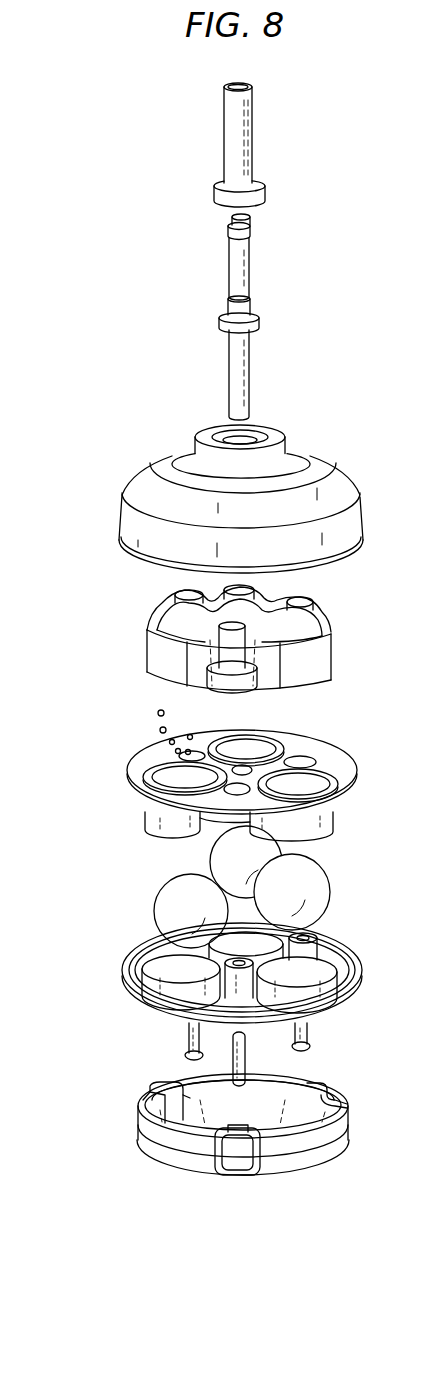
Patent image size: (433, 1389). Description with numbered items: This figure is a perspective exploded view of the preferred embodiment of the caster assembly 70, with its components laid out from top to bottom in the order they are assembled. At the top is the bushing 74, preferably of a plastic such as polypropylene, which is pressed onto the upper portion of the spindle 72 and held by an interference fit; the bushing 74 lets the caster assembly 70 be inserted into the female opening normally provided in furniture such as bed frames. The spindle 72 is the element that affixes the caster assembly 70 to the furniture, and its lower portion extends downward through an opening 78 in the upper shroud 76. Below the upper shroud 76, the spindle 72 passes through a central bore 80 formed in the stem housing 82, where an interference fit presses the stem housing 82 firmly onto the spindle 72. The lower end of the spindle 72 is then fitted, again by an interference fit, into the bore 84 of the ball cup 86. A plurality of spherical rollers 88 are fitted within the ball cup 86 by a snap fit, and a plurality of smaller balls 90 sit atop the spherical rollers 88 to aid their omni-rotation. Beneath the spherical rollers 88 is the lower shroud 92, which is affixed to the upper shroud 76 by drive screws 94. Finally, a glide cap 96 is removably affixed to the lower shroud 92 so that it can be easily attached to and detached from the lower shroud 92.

The caster assembly 70 is at (88, 606).
The spindle 72 is at (250, 263).
The bushing 74 is at (255, 128).
The upper shroud 76 is at (356, 517).
The opening 78 is at (263, 432).
The central bore 80 is at (273, 590).
The stem housing 82 is at (331, 653).
The bore 84 is at (280, 752).
The ball cup 86 is at (356, 770).
The spherical rollers 88 is at (308, 875).
The smaller balls 90 is at (160, 729).
The lower shroud 92 is at (363, 963).
The drive screws 94 is at (308, 1035).
The glide cap 96 is at (327, 1158).